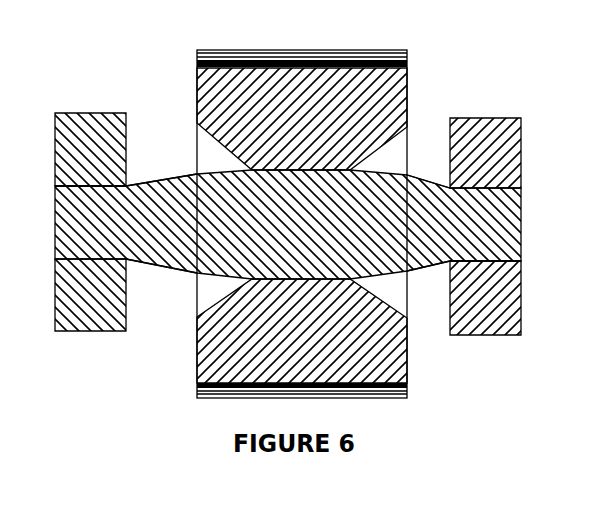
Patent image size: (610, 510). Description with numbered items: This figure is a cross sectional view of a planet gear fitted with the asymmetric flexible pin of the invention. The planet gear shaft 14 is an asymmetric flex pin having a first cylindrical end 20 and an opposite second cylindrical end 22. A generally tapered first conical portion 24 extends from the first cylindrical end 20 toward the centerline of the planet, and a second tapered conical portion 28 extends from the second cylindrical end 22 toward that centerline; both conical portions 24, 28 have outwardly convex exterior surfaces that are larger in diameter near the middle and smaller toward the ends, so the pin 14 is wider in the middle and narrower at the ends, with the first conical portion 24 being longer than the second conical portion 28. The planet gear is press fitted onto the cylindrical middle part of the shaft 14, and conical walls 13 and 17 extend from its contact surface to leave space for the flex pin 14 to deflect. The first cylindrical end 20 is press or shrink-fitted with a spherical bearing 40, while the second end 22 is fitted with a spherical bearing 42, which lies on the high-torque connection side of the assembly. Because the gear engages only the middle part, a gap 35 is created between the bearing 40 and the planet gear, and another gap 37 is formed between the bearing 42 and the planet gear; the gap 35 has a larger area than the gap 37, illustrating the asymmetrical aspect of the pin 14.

The conical wall 13 is at (201, 136).
The planet gear shaft 14 is at (55, 238).
The conical wall 17 is at (400, 310).
The first cylindrical end 20 is at (82, 185).
The second cylindrical end 22 is at (503, 262).
The first conical portion 24 is at (160, 182).
The second conical portion 28 is at (424, 270).
The gap 35 is at (163, 288).
The gap 37 is at (428, 137).
The spherical bearing 40 is at (69, 112).
The spherical bearing 42 is at (505, 118).